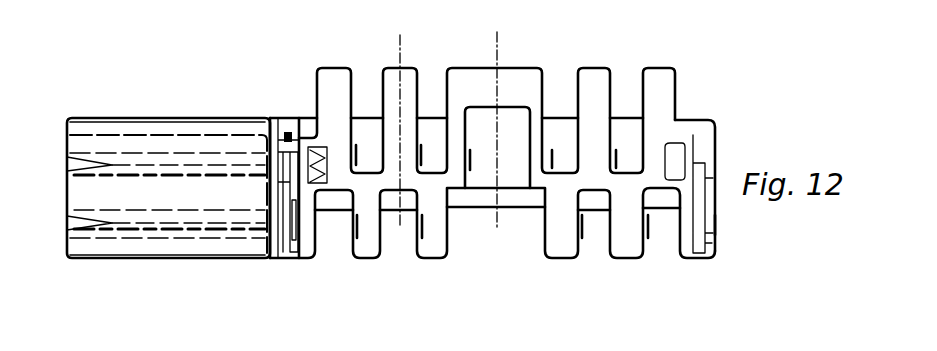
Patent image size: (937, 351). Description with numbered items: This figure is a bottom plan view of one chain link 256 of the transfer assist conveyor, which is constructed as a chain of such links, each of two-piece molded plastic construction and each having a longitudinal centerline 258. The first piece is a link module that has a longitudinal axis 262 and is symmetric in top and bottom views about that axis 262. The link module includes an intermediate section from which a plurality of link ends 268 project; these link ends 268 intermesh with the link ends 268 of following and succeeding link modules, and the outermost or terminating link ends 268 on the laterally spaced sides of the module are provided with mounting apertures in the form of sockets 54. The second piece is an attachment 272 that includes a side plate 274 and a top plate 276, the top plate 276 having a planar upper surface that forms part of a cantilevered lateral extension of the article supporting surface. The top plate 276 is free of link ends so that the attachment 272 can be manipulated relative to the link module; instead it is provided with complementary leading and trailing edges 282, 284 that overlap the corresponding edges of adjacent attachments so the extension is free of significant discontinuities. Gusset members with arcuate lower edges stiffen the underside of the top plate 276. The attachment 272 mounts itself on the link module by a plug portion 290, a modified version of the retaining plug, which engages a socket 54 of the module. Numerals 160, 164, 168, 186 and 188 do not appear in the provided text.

The sockets 54 is at (290, 262).
The end wall 160 is at (678, 95).
The base block 164 is at (480, 210).
The ribs 168 is at (303, 262).
The contact 186 is at (74, 227).
The conductor 188 is at (204, 222).
The chain link 256 is at (680, 32).
The longitudinal centerline 258 is at (420, 23).
The longitudinal axis 262 is at (497, 32).
The link ends 268 is at (381, 68).
The attachment 272 is at (188, 117).
The side plate 274 is at (277, 263).
The top plate 276 is at (115, 245).
The leading edge 282 is at (150, 258).
The trailing edge 284 is at (137, 117).
The plug portion 290 is at (288, 132).